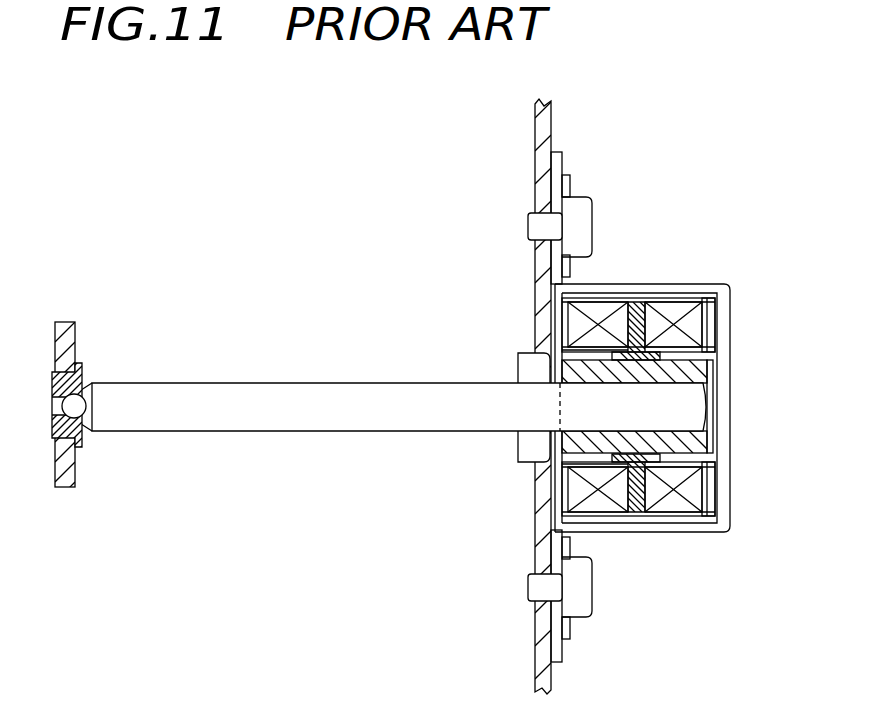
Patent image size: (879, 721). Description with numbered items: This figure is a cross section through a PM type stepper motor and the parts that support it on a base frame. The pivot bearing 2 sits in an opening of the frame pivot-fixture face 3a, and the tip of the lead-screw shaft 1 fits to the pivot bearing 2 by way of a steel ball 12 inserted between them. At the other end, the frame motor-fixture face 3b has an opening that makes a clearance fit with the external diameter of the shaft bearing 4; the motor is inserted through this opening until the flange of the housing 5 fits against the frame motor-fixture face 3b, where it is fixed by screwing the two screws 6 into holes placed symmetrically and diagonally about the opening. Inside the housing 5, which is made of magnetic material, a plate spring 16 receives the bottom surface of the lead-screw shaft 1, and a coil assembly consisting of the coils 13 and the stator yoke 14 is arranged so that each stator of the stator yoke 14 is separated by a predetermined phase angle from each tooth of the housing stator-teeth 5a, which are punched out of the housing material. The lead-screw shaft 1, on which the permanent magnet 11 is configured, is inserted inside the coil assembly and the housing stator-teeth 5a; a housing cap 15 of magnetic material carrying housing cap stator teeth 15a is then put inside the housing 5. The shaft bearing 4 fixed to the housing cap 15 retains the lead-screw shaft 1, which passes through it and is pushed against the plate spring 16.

The lead-screw shaft 1 is at (210, 413).
The pivot bearing 2 is at (53, 385).
The frame pivot-fixture face 3a is at (68, 322).
The frame motor-fixture face 3b is at (535, 170).
The shaft bearing 4 is at (530, 447).
The housing 5 is at (668, 283).
The housing stator-teeth 5a is at (692, 352).
The screws 6 is at (573, 200).
The permanent magnet 11 is at (697, 445).
The steel ball 12 is at (72, 408).
The coils 13 is at (675, 500).
The stator yoke 14 is at (630, 514).
The housing cap 15 is at (585, 298).
The housing cap stator teeth 15a is at (582, 343).
The plate spring 16 is at (716, 379).